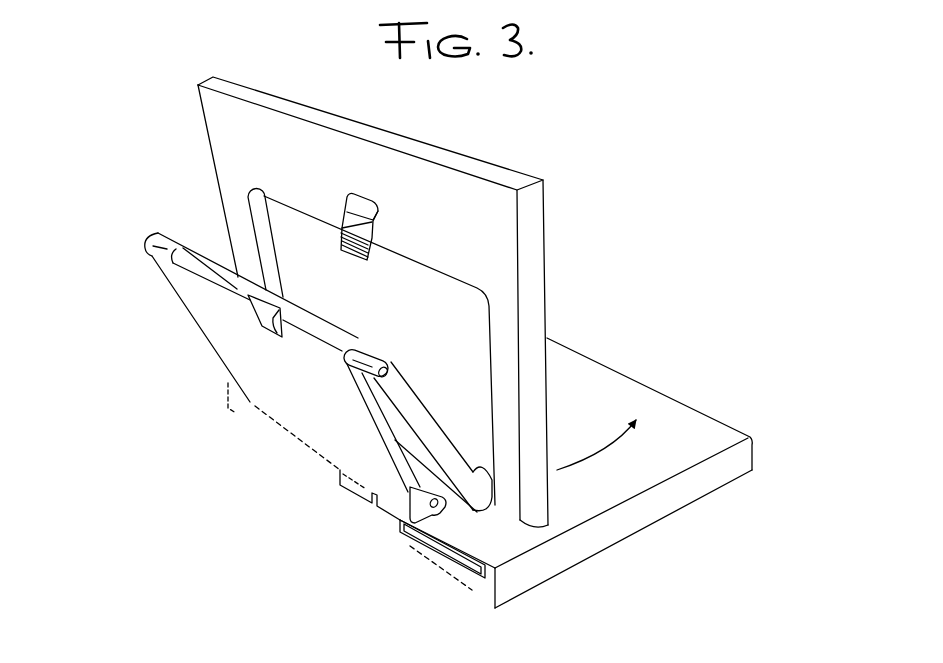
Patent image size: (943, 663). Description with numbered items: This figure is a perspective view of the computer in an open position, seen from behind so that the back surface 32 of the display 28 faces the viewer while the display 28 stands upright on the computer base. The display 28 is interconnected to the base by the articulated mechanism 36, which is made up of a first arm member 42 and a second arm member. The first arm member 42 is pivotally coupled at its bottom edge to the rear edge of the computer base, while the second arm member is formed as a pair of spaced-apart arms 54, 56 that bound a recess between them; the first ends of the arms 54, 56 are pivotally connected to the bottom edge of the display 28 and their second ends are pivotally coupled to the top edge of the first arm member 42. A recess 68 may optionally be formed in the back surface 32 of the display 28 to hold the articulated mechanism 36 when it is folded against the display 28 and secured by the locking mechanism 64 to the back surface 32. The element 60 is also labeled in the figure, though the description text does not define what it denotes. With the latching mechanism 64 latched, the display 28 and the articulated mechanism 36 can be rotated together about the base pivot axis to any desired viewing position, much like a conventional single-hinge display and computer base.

The display 28 is at (550, 210).
The back surface 32 is at (228, 149).
The articulated mechanism 36 is at (191, 228).
The first arm member 42 is at (300, 372).
The arm 54 is at (163, 266).
The arm 56 is at (420, 431).
The base 60 is at (559, 96).
The locking mechanism 64 is at (390, 222).
The recess 68 is at (465, 347).